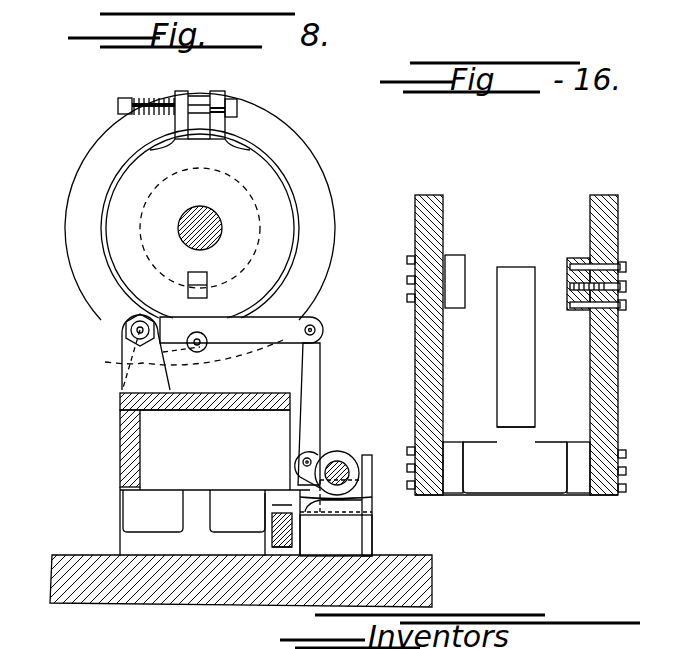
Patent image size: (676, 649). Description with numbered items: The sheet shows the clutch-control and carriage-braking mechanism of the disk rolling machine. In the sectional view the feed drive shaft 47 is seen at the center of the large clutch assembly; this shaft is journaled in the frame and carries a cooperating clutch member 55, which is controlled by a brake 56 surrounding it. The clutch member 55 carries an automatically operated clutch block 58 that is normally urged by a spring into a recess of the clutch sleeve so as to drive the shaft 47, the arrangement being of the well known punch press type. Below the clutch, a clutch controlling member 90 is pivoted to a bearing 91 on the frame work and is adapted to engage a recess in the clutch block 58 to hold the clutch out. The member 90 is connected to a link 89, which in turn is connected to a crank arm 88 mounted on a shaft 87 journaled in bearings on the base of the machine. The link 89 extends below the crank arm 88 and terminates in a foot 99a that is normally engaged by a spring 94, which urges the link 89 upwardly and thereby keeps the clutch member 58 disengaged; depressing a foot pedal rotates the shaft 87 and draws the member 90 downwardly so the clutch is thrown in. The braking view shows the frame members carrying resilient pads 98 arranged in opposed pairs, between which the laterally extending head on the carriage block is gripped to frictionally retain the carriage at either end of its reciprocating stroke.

In FIG. 8, the feed drive shaft 47 is at (188, 231).
In FIG. 8, the clutch member 55 is at (277, 232).
In FIG. 8, the brake 56 is at (275, 167).
In FIG. 8, the clutch member 58 is at (213, 273).
In FIG. 8, the shaft 87 is at (330, 465).
In FIG. 8, the crank arm 88 is at (317, 455).
In FIG. 8, the link 89 is at (310, 395).
In FIG. 8, the clutch controlling member 90 is at (283, 335).
In FIG. 8, the bearing 91 is at (122, 357).
In FIG. 16, the bearing 91 is at (514, 468).
In FIG. 8, the spring 94 is at (283, 530).
In FIG. 16, the resilient pads 98 is at (456, 268).
In FIG. 8, the base block 99a is at (305, 515).